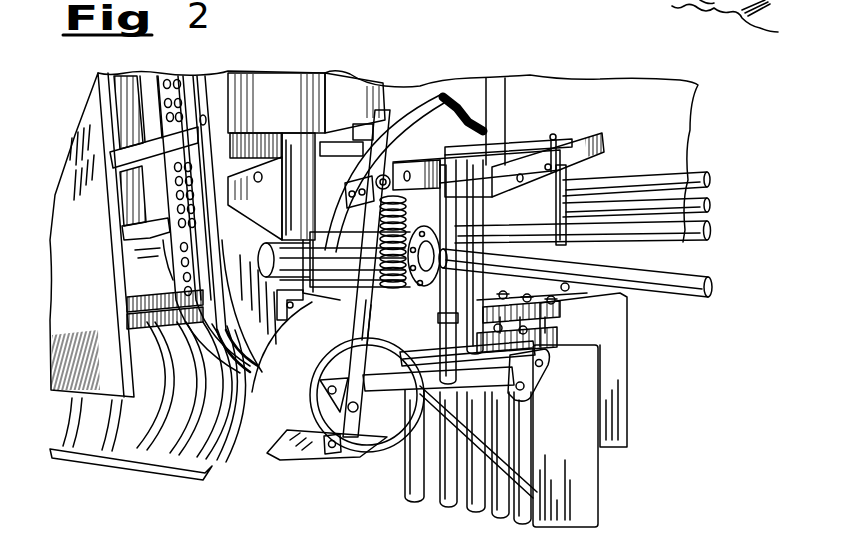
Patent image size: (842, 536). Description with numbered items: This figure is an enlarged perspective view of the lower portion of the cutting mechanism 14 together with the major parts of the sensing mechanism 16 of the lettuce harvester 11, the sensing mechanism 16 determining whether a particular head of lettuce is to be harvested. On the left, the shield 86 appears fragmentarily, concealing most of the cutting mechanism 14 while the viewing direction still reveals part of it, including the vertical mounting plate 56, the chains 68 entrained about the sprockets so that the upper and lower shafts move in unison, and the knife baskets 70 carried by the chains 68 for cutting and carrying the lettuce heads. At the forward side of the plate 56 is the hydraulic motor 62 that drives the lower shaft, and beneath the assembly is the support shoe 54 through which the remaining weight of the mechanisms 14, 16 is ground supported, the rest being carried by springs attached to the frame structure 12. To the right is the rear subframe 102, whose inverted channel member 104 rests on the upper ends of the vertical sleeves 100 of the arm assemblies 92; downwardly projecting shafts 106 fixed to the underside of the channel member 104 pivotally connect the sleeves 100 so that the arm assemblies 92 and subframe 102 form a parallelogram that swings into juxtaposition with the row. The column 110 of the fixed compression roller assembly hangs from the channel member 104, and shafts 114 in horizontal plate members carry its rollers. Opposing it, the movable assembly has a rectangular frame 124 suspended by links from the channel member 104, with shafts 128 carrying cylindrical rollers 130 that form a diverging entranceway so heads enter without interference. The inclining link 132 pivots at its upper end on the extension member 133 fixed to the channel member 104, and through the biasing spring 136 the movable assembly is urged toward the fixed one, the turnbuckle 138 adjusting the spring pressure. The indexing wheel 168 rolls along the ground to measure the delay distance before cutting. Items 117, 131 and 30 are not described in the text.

The shield 86 is at (70, 150).
The chains 68 is at (172, 282).
The vertical mounting plate 56 is at (272, 352).
The frame structure 12 is at (120, 462).
The cutting mechanism 14 is at (158, 485).
The knife baskets 70 is at (211, 468).
The extension member 133 is at (355, 138).
The hydraulic motor 62 is at (405, 236).
The inclining link 132 is at (366, 310).
The biasing spring 136 is at (350, 295).
The turnbuckle 138 is at (320, 370).
The indexing wheel 168 is at (308, 400).
The support shoe 54 is at (309, 453).
The vertical sleeves 100 is at (470, 205).
The rear subframe 102 is at (547, 129).
The inverted channel member 104 is at (598, 140).
The arm assemblies 92 is at (707, 162).
The column 110 is at (567, 262).
The downwardly projecting shafts 106 is at (480, 265).
The shafts 114 is at (566, 301).
The shafts 128 is at (540, 340).
The side panel 117 is at (640, 330).
The front panel 131 is at (585, 487).
The rectangular frame 124 is at (530, 380).
The cylindrical rollers 130 is at (478, 514).
The sensing mechanism 16 is at (462, 3).
The harvester 11 is at (499, 0).
The element of adjacent figure 30 is at (694, 16).